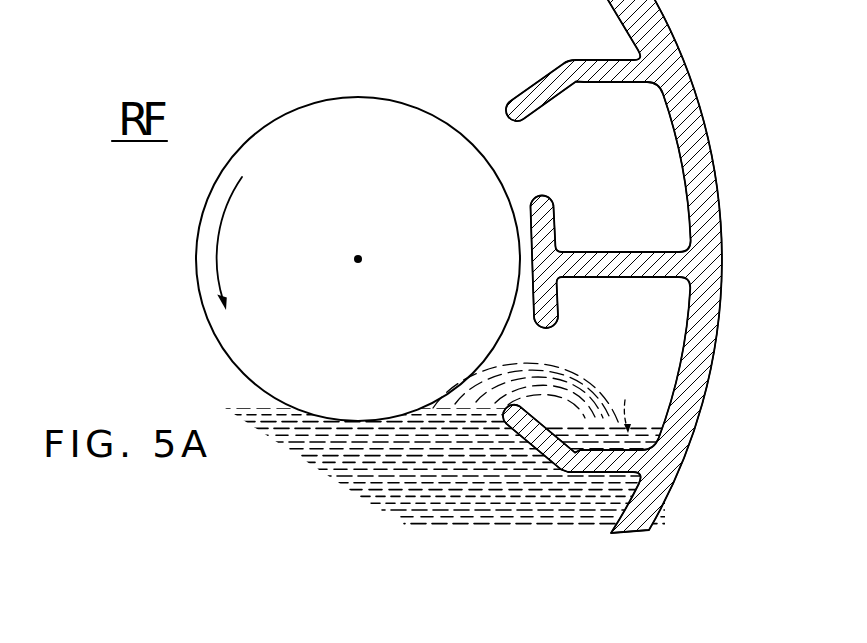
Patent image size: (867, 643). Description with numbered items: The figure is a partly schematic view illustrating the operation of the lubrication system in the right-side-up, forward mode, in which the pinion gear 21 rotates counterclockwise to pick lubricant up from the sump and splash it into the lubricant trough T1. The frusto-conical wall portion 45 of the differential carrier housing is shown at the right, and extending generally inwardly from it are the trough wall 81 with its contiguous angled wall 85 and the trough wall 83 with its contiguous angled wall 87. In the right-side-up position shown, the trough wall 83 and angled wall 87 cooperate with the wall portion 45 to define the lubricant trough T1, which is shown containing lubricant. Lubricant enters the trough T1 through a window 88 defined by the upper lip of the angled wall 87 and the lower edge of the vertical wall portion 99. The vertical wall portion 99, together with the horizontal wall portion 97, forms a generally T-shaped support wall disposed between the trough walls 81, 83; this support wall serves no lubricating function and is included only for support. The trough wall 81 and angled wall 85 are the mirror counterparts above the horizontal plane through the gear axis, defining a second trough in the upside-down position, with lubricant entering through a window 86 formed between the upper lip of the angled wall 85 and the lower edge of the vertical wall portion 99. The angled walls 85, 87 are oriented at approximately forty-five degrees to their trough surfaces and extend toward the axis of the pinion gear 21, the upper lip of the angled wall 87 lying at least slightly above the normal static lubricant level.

The pinion gear 21 is at (286, 134).
The frusto-conical wall portion 45 is at (623, 9).
The trough wall 81 is at (607, 67).
The angled wall 85 is at (533, 90).
The window 86 is at (532, 161).
The vertical wall portion 99 is at (553, 222).
The horizontal wall portion 97 is at (603, 264).
The window 88 is at (540, 357).
The lubricant trough T1 is at (637, 404).
The angled wall 87 is at (527, 437).
The trough wall 83 is at (605, 458).